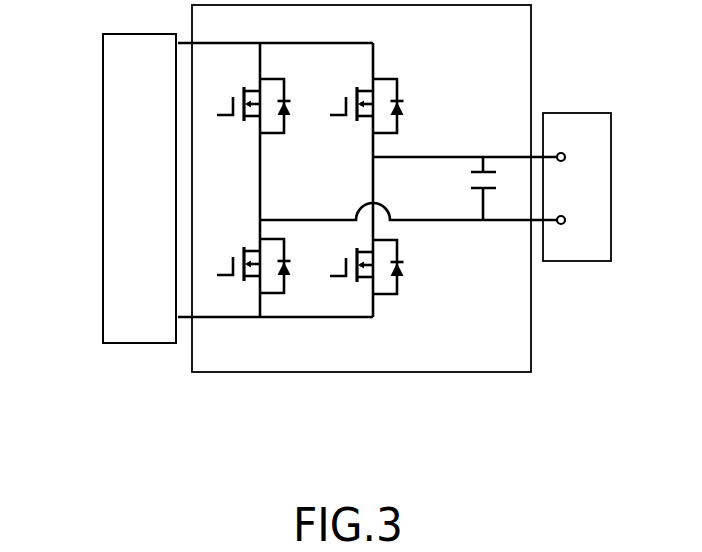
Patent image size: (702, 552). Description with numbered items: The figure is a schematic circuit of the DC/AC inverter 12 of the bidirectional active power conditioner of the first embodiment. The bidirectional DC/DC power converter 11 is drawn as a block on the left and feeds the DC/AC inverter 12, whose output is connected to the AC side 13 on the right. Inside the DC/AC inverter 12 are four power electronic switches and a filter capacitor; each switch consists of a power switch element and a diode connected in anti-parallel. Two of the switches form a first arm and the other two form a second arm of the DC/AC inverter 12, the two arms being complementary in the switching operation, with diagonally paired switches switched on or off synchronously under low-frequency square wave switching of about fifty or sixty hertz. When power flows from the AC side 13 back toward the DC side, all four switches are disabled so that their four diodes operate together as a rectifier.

The bidirectional DC/DC power converter 11 is at (104, 168).
The DC/AC inverter 12 is at (395, 365).
The AC side 13 is at (577, 261).